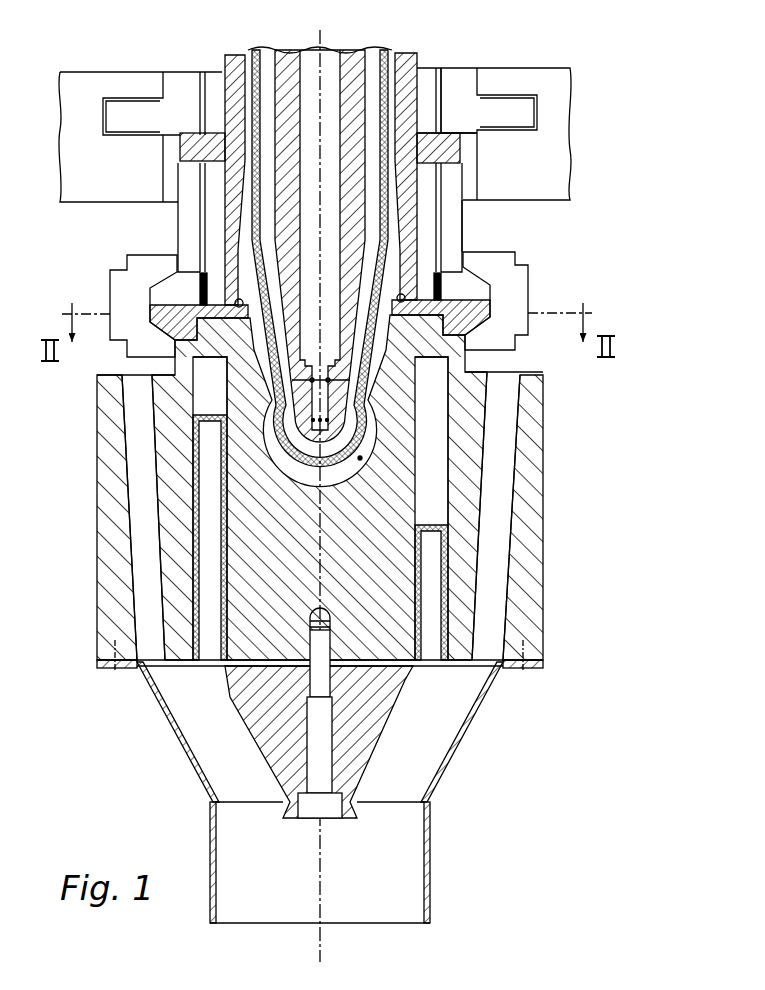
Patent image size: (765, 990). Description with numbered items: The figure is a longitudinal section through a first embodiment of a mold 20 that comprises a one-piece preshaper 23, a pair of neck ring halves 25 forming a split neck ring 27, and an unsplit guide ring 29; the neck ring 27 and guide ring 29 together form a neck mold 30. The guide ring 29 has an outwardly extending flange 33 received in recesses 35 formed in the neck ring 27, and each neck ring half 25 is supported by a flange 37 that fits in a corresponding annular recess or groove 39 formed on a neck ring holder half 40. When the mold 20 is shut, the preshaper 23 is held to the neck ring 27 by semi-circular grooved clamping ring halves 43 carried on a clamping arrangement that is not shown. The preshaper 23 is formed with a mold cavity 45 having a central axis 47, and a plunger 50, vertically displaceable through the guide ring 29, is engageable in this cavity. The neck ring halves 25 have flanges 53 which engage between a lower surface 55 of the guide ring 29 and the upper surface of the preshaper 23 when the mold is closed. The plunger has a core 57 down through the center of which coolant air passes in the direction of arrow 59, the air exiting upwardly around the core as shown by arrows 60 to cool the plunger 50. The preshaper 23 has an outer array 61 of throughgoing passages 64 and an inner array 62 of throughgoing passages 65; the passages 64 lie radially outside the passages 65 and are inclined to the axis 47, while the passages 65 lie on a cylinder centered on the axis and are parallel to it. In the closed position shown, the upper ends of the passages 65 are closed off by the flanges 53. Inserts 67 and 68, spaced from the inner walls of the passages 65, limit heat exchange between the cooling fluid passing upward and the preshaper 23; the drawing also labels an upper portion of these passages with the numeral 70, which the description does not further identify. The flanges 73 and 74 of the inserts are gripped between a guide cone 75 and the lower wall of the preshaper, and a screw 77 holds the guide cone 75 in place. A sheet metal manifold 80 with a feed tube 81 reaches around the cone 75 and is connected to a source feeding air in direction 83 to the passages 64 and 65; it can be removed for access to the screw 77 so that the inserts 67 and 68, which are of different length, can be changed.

The mold 20 is at (532, 238).
The preshaper 23 is at (320, 531).
The neck ring half 25 is at (176, 212).
The split neck ring 27 is at (172, 231).
The guide ring 29 is at (226, 56).
The neck mold 30 is at (470, 240).
The outwardly extending flange 33 is at (447, 150).
The recesses 35 is at (183, 150).
The flange 37 is at (500, 110).
The annular recess or groove 39 is at (527, 118).
The neck ring holder half 40 is at (60, 72).
The clamping ring halves 43 is at (110, 285).
The mold cavity 45 is at (360, 460).
The central axis 47 is at (320, 525).
The plunger 50 is at (391, 54).
The flanges 53 is at (217, 306).
The lower surface 55 is at (228, 306).
The core 57 is at (351, 56).
The arrow 59 is at (320, 226).
The arrows 60 is at (373, 65).
The outer array 61 is at (485, 665).
The inner array 62 is at (432, 672).
The throughgoing passages 64 is at (140, 610).
The throughgoing passages 65 is at (196, 401).
The insert 67 is at (427, 524).
The insert 68 is at (210, 414).
The bore 70 is at (195, 384).
The flange 73 is at (473, 720).
The flange 74 is at (185, 668).
The guide cone 75 is at (367, 762).
The screw 77 is at (313, 742).
The manifold 80 is at (208, 818).
The feed tube 81 is at (430, 847).
The direction 83 is at (320, 880).